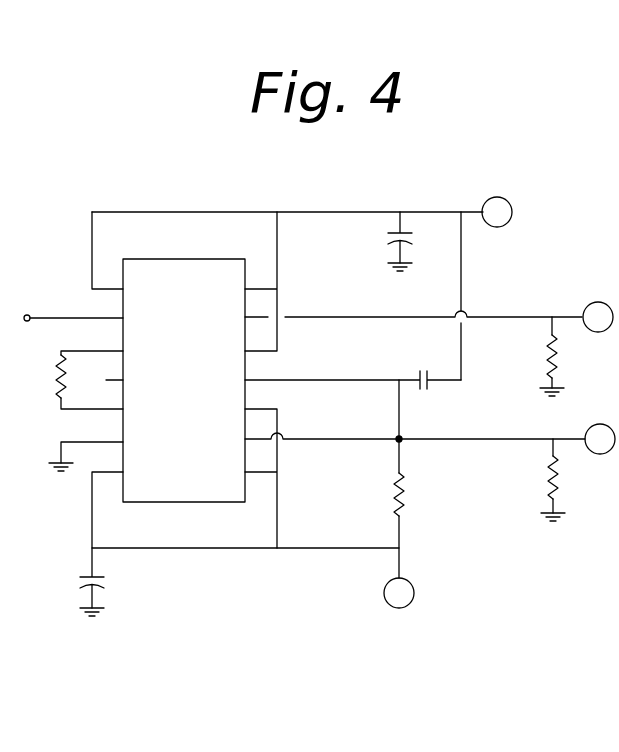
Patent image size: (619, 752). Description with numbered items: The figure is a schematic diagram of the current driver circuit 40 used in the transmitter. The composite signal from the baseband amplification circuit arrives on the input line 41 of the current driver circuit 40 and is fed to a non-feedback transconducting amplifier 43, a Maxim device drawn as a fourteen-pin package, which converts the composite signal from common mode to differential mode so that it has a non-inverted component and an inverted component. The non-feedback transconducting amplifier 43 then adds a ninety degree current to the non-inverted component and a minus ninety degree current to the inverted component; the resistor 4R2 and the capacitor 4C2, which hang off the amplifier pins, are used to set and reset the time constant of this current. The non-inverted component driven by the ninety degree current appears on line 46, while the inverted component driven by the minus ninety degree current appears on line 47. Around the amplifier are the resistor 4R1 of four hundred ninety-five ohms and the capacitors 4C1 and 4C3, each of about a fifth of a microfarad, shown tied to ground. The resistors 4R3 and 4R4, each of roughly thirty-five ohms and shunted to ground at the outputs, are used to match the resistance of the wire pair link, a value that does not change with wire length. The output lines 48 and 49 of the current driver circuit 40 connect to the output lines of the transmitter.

The current driver circuit 40 is at (292, 624).
The input line 41 is at (59, 317).
The non-feedback transconducting amplifier 43 is at (175, 259).
The line 46 is at (258, 317).
The line 47 is at (262, 439).
The output line 48 is at (565, 317).
The output line 49 is at (565, 439).
The resistor 4R1 is at (67, 380).
The resistor 4R2 is at (417, 494).
The resistor 4R3 is at (571, 480).
The resistor 4R4 is at (575, 356).
The capacitor 4C1 is at (376, 241).
The capacitor 4C2 is at (353, 369).
The capacitor 4C3 is at (118, 582).